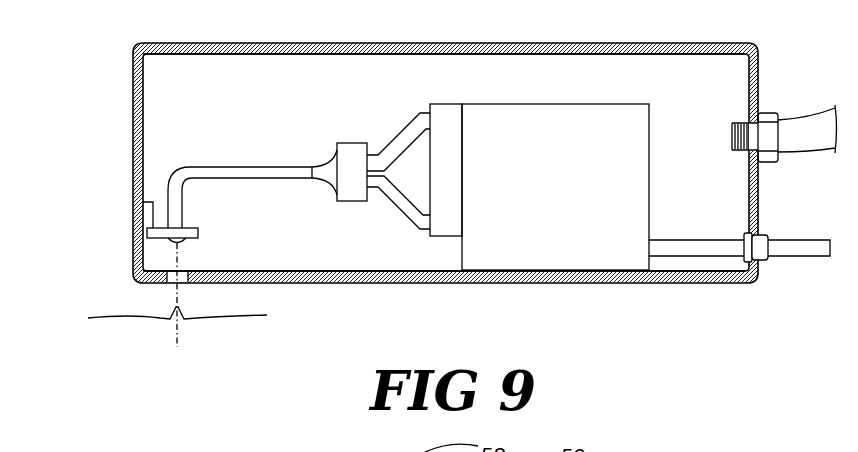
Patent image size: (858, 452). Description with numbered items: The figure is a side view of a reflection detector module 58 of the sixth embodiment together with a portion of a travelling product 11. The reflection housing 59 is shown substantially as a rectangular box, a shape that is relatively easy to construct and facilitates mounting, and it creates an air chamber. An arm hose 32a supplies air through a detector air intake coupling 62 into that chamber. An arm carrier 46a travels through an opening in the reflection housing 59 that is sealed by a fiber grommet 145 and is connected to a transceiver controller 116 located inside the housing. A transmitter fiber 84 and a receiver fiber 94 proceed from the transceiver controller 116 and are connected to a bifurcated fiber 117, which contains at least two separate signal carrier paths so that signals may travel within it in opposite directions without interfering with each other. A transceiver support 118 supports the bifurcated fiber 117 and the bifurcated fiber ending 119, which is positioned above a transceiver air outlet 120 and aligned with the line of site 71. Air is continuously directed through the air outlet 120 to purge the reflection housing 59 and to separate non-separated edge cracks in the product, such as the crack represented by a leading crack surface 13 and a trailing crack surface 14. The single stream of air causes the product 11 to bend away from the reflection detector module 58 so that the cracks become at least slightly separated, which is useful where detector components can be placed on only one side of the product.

The reflection detector module 58 is at (389, 34).
The reflection housing 59 is at (505, 43).
The detector air intake coupling 62 is at (768, 110).
The arm hose 32a is at (808, 150).
The arm carrier 46a is at (797, 252).
The fiber grommet 145 is at (747, 235).
The transceiver controller 116 is at (543, 115).
The transmitter fiber 84 is at (400, 140).
The receiver fiber 94 is at (393, 203).
The bifurcated fiber 117 is at (238, 168).
The transceiver support 118 is at (148, 222).
The bifurcated fiber ending 119 is at (175, 243).
The transceiver air outlet 120 is at (170, 285).
The product 11 is at (232, 320).
The leading crack surface 13 is at (192, 322).
The trailing crack surface 14 is at (164, 322).
The line of site 71 is at (183, 342).